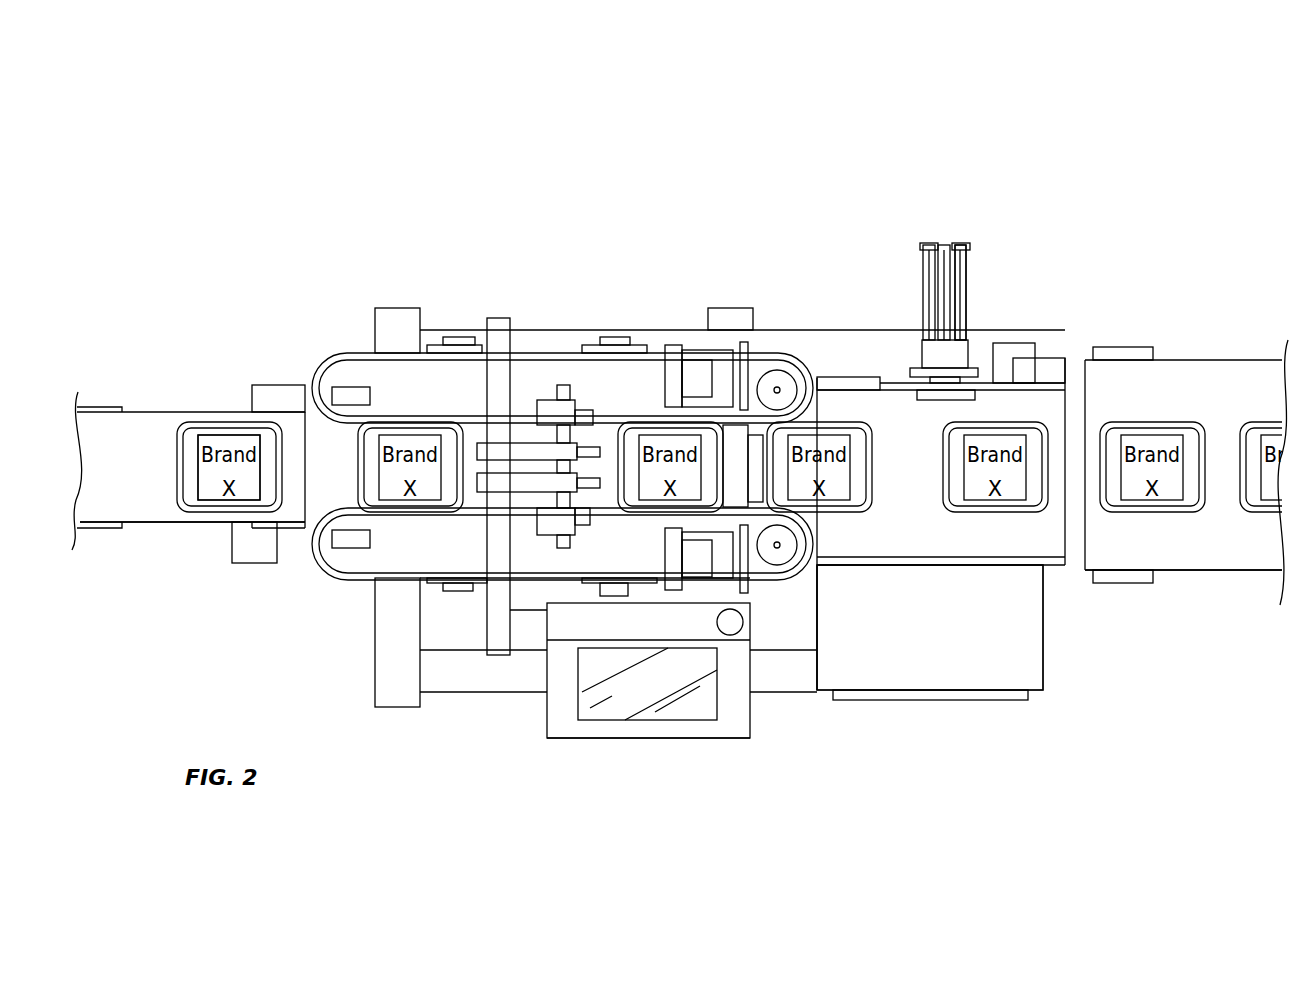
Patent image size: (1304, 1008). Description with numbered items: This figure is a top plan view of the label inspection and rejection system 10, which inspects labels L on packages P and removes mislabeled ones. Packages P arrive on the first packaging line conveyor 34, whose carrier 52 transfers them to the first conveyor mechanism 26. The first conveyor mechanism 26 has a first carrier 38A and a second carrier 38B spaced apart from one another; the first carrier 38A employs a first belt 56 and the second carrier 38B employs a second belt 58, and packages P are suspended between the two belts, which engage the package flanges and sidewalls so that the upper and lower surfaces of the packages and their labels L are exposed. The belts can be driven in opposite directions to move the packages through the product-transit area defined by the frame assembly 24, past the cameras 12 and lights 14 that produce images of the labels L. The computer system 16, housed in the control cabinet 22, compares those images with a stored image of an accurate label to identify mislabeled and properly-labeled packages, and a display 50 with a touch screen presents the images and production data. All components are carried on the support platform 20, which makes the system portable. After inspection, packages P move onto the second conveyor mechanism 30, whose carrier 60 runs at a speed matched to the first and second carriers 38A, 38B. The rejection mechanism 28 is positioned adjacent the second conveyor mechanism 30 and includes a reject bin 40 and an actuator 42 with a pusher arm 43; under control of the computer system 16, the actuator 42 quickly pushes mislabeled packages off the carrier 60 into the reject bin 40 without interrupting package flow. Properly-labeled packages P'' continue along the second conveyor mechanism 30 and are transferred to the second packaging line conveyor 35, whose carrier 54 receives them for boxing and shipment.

The label inspection and rejection system 10 is at (410, 232).
The cameras 12 is at (568, 453).
The lights 14 is at (563, 409).
The computer system 16 is at (757, 712).
The support platform 20 is at (450, 692).
The control cabinet 22 is at (693, 740).
The frame assembly 24 is at (512, 372).
The first conveyor mechanism 26 is at (562, 449).
The rejection mechanism 28 is at (925, 288).
The second conveyor mechanism 30 is at (868, 410).
The first packaging line conveyor 34 is at (163, 407).
The second packaging line conveyor 35 is at (1197, 572).
The first carrier 38A is at (368, 578).
The second carrier 38B is at (357, 352).
The reject bin 40 is at (990, 670).
The actuator 42 is at (970, 312).
The pusher arm 43 is at (960, 394).
The display 50 is at (622, 720).
The carrier 52 is at (140, 510).
The carrier 54 is at (1178, 350).
The first belt 56 is at (393, 580).
The second belt 58 is at (478, 345).
The carrier 60 is at (905, 530).
The packages P is at (320, 380).
The labels L is at (208, 498).
The properly-labeled packages P'' is at (1074, 526).